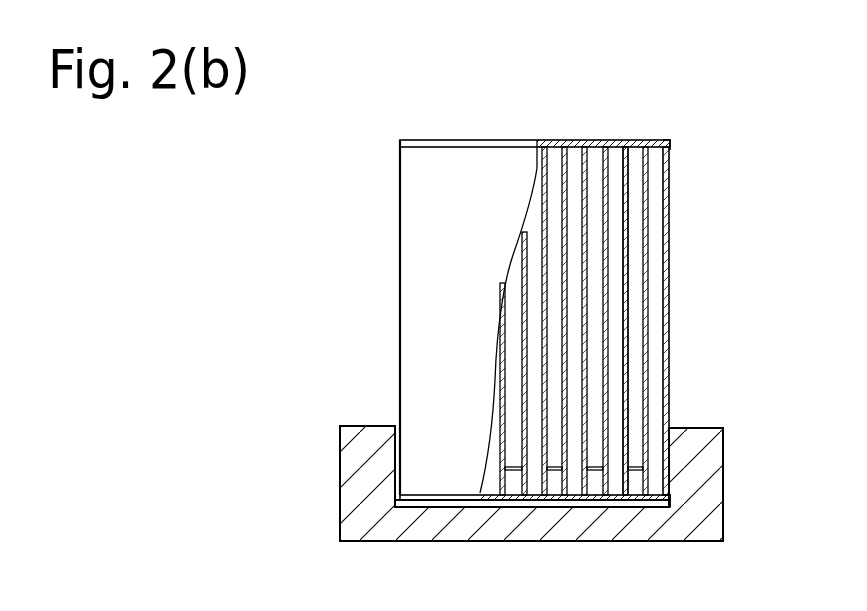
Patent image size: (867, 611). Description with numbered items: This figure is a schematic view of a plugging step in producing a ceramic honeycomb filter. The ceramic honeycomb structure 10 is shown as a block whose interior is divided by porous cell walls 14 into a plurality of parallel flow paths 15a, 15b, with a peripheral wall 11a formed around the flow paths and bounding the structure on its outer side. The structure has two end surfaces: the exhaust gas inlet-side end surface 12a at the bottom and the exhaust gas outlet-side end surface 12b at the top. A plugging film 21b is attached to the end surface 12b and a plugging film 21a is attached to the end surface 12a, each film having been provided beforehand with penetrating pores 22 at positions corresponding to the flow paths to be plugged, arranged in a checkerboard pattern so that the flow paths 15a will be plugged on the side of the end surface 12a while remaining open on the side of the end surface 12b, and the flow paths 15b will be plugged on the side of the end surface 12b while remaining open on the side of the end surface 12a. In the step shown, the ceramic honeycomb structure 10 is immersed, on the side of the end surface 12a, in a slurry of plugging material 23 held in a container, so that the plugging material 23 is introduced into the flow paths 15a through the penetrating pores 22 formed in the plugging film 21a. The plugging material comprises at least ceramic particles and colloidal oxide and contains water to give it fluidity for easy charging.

The ceramic honeycomb structure 10 is at (404, 275).
The plugging film 21b is at (400, 142).
The plugging film 21a is at (400, 496).
The exhaust gas outlet-side end surface 12b is at (670, 143).
The exhaust gas inlet-side end surface 12a is at (670, 500).
The peripheral wall 11a is at (670, 197).
The cell wall 14 is at (645, 235).
The flow path 15a is at (633, 365).
The flow path 15b is at (613, 303).
The penetrating pore 22 is at (513, 500).
The plugging material 23 is at (590, 503).